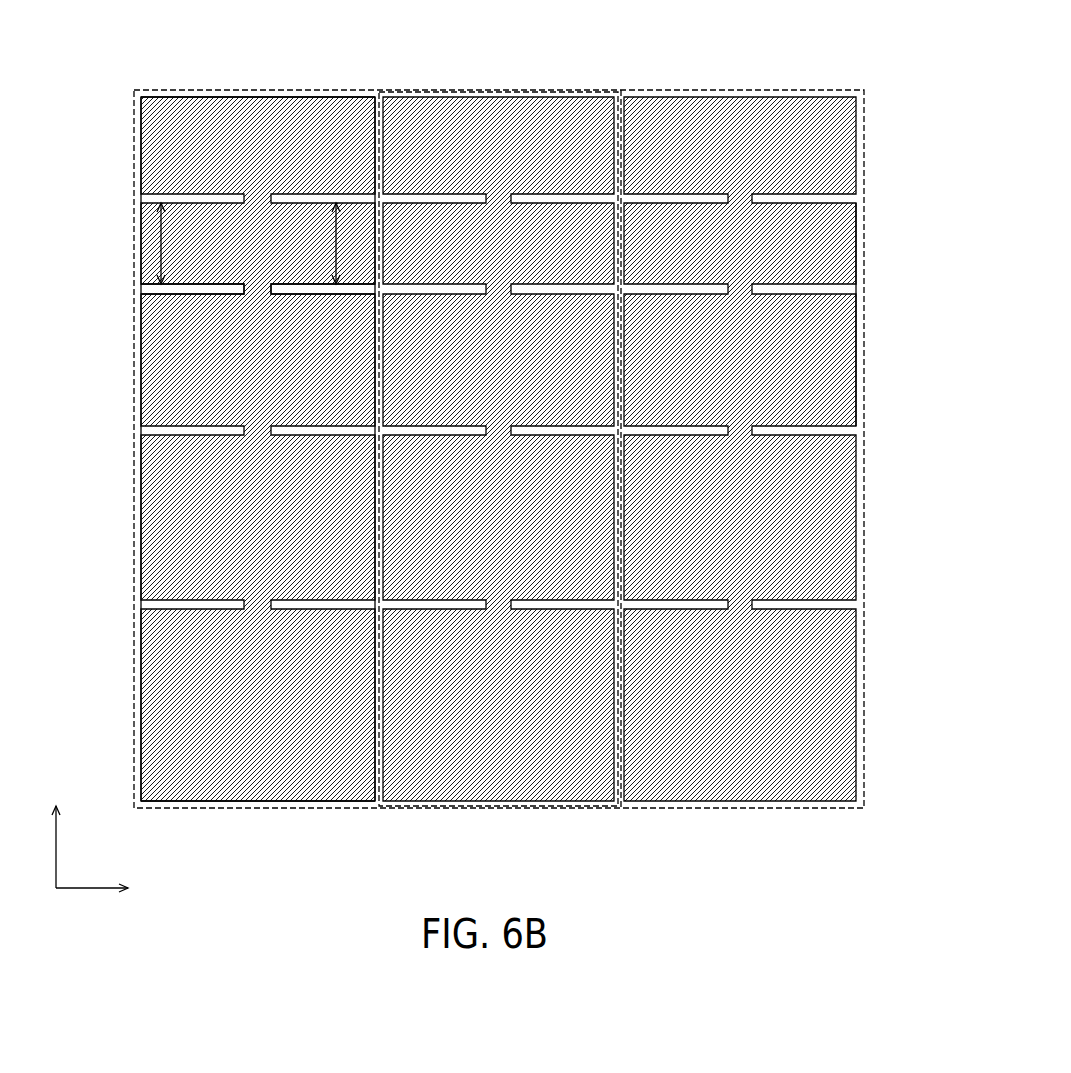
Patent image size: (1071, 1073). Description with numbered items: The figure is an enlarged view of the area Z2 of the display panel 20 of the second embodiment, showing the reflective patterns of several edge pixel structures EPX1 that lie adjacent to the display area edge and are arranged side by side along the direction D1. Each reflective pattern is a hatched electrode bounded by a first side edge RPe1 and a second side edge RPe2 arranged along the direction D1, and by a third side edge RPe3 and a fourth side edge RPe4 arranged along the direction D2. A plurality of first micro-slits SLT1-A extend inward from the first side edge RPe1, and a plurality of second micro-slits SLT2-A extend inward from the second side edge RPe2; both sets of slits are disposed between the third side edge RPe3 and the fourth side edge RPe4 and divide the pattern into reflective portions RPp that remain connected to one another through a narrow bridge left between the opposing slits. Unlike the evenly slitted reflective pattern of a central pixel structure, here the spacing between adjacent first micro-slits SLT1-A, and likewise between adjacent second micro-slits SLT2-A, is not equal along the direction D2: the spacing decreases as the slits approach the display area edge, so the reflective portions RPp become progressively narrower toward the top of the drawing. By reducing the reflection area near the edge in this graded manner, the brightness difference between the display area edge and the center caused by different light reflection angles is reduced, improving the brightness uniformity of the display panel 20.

The first side edge RPe1 is at (133, 130).
The second side edge RPe2 is at (368, 130).
The third side edge RPe3 is at (253, 88).
The fourth side edge RPe4 is at (238, 797).
The first micro-slits SLT1-A is at (172, 281).
The second micro-slits SLT2-A is at (298, 281).
The edge pixel structure EPX1 is at (563, 82).
The area Z2 is at (697, 80).
The reflective portions RPp is at (820, 233).
The direction D1 is at (110, 891).
The direction D2 is at (57, 834).
The display panel 20 is at (932, 863).